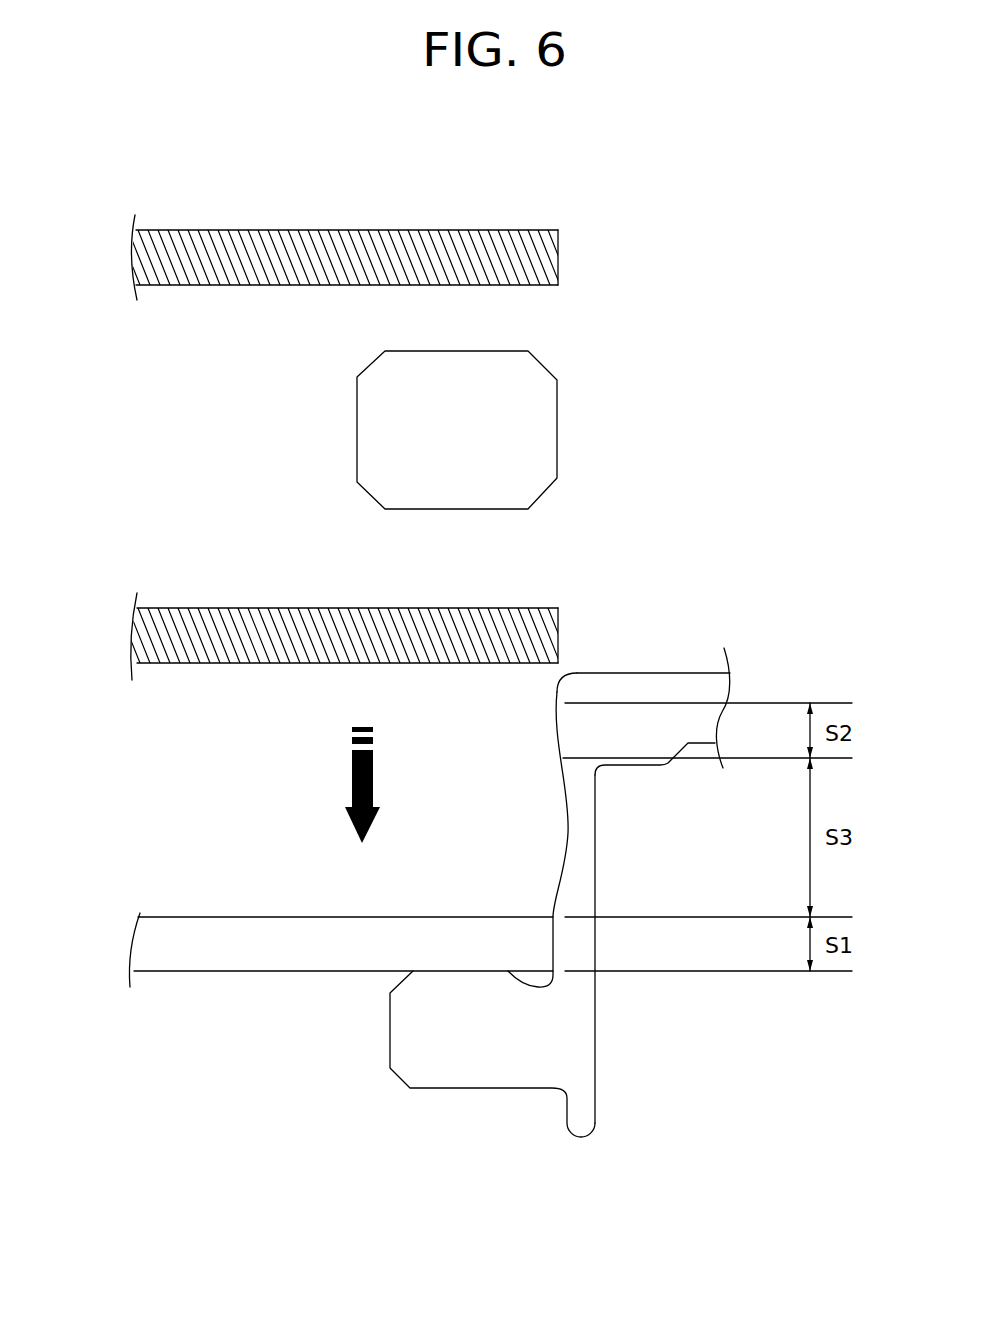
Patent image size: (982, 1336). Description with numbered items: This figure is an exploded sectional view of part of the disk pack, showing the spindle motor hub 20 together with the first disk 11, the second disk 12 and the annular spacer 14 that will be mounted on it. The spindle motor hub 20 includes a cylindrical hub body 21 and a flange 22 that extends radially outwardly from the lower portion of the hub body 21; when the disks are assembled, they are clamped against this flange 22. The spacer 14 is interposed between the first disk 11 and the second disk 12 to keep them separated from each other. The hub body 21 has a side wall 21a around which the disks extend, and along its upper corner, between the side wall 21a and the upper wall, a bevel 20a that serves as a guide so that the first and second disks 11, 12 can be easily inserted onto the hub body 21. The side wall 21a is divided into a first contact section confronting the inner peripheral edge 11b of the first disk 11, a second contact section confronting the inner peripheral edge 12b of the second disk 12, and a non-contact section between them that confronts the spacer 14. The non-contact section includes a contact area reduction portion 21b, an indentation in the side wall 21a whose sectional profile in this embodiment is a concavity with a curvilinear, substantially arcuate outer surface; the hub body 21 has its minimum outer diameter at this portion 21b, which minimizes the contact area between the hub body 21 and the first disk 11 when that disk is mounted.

The first disk 11 is at (175, 633).
The inner peripheral edge of the first disk 11b is at (558, 637).
The second disk 12 is at (173, 254).
The inner peripheral edge of the second disk 12b is at (558, 258).
The spacer 14 is at (393, 424).
The spindle motor hub 20 is at (621, 853).
The bevel 20a is at (552, 677).
The hub body 21 is at (700, 693).
The side wall 21a is at (583, 842).
The contact area reduction portion 21b is at (568, 840).
The flange 22 is at (457, 1050).